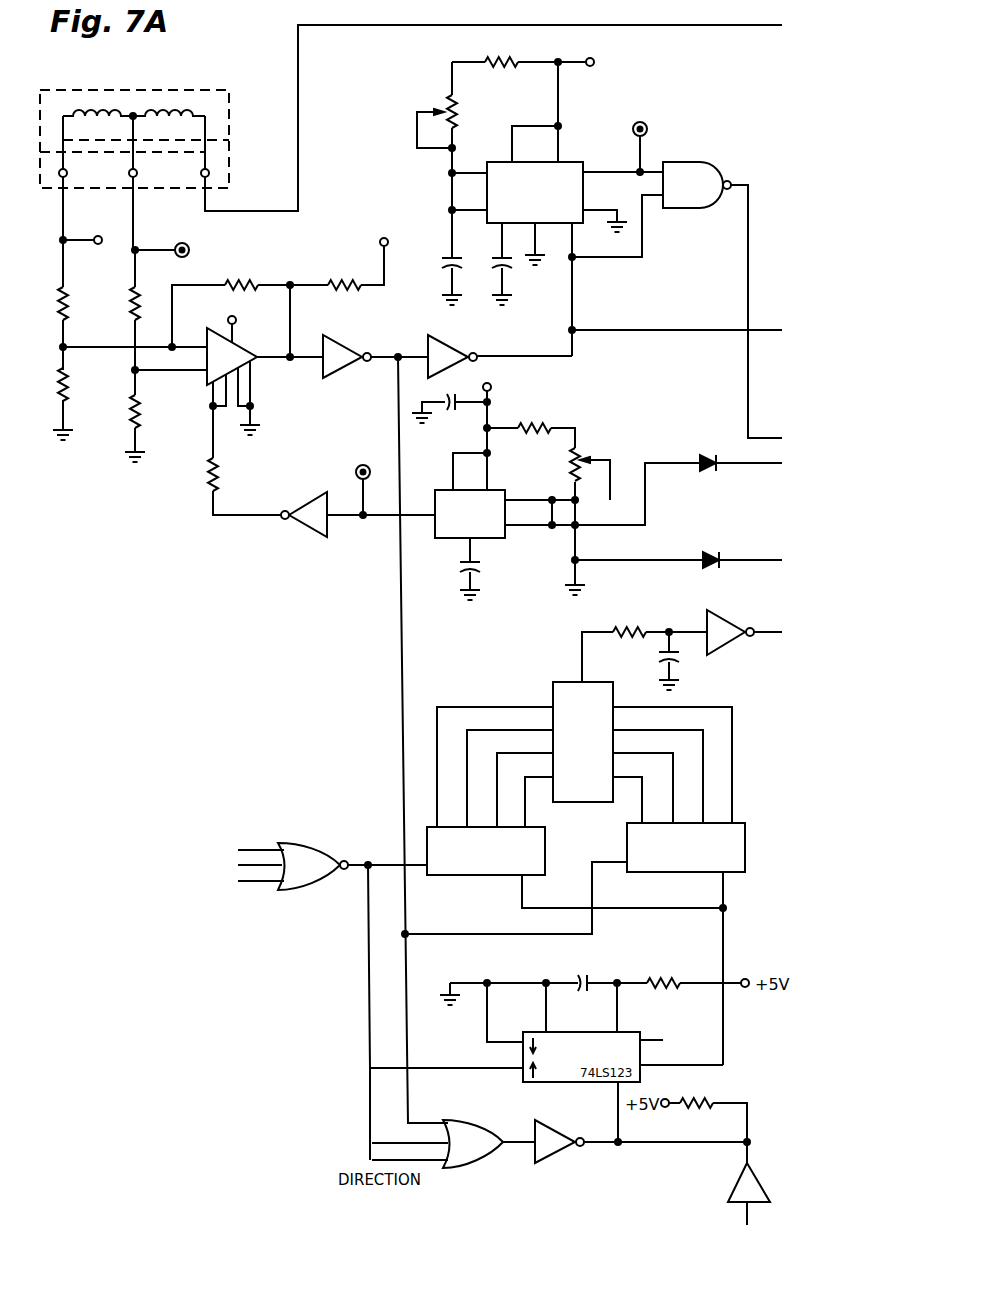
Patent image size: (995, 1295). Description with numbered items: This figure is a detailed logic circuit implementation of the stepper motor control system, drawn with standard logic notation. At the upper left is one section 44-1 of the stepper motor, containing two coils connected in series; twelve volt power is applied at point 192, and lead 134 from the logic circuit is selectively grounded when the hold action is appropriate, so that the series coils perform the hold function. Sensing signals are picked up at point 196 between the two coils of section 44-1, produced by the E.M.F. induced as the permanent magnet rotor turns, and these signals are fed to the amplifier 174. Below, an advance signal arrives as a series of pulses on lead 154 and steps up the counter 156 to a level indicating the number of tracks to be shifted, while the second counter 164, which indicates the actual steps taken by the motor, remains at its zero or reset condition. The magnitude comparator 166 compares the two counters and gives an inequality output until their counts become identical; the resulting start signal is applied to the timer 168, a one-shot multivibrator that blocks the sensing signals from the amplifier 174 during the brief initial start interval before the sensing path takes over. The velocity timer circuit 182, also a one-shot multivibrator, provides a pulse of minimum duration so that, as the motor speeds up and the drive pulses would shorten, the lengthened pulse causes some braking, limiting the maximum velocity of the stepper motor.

The stepper motor section 44-1 is at (183, 88).
The power point 192 is at (68, 243).
The sensing point 196 is at (138, 373).
The amplifier 174 is at (243, 340).
The velocity timer circuit 182 is at (570, 160).
The lead 134 is at (746, 27).
The timer 168 is at (443, 540).
The lead 154 is at (386, 862).
The counter 156 is at (472, 877).
The magnitude comparator 166 is at (582, 805).
The second counter 164 is at (658, 875).